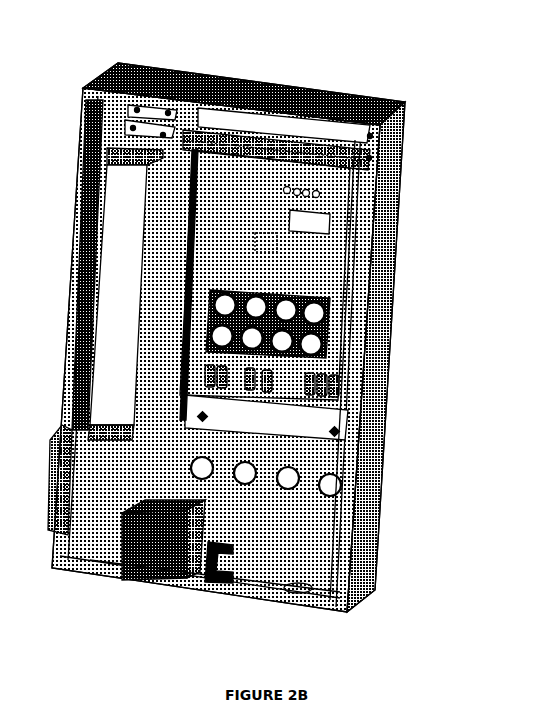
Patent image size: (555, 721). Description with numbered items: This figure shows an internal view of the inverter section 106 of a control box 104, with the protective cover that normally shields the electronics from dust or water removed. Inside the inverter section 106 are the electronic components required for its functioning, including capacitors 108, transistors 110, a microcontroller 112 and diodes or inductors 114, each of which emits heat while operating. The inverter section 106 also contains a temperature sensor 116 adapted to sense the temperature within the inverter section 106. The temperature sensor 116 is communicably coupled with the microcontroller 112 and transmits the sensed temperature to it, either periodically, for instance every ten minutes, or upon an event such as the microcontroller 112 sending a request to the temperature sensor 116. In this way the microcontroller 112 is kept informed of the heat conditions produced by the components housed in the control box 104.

The control box 104 is at (290, 63).
The inverter section 106 is at (343, 307).
The capacitors 108 is at (305, 345).
The transistors 110 is at (318, 273).
The microcontroller 112 is at (322, 230).
The diodes or inductors 114 is at (330, 197).
The temperature sensor 116 is at (198, 268).